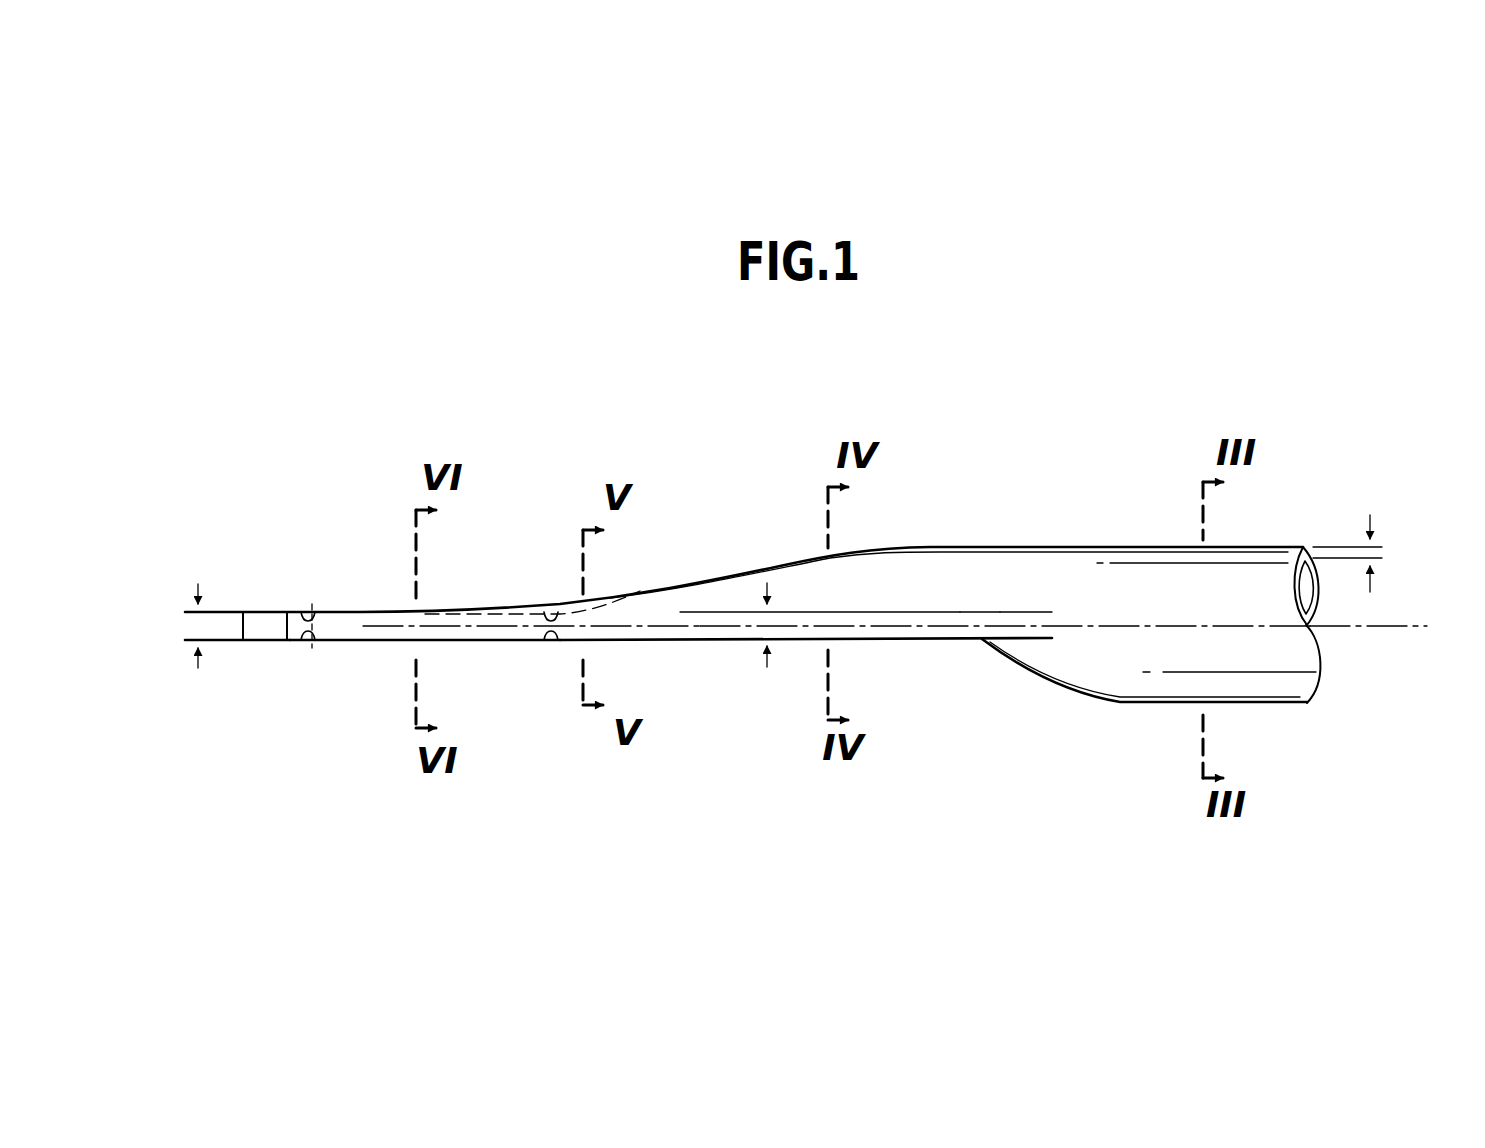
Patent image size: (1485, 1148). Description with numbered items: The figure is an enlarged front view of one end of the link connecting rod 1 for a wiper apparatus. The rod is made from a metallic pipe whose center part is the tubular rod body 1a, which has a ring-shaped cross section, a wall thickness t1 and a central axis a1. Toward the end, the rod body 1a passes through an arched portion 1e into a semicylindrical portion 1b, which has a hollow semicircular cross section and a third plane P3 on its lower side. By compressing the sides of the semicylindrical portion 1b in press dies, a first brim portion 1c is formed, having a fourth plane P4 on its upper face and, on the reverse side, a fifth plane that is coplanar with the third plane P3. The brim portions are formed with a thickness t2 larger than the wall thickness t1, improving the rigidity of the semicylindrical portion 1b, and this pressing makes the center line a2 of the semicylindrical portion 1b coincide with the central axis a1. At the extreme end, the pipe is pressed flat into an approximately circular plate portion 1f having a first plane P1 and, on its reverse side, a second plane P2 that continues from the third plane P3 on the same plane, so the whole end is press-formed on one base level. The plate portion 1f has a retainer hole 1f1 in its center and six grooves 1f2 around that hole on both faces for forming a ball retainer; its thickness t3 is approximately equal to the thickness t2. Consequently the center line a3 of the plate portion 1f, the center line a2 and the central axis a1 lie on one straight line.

The link connecting rod 1 is at (1175, 538).
The tubular rod body 1a is at (1280, 690).
The semicylindrical portion 1b is at (905, 623).
The first brim portion 1c is at (963, 613).
The arched portion 1e is at (623, 598).
The plate portion 1f is at (267, 632).
The retainer hole 1f1 is at (318, 633).
The grooves 1f2 is at (313, 612).
The central axis a1 is at (1408, 624).
The center line a2 is at (960, 622).
The center line a3 is at (445, 625).
The wall thickness t1 is at (1384, 553).
The thickness t2 is at (766, 632).
The thickness t3 is at (196, 627).
The first plane P1 is at (268, 612).
The second plane P2 is at (423, 642).
The third plane P3 is at (855, 640).
The fourth plane P4 is at (995, 612).